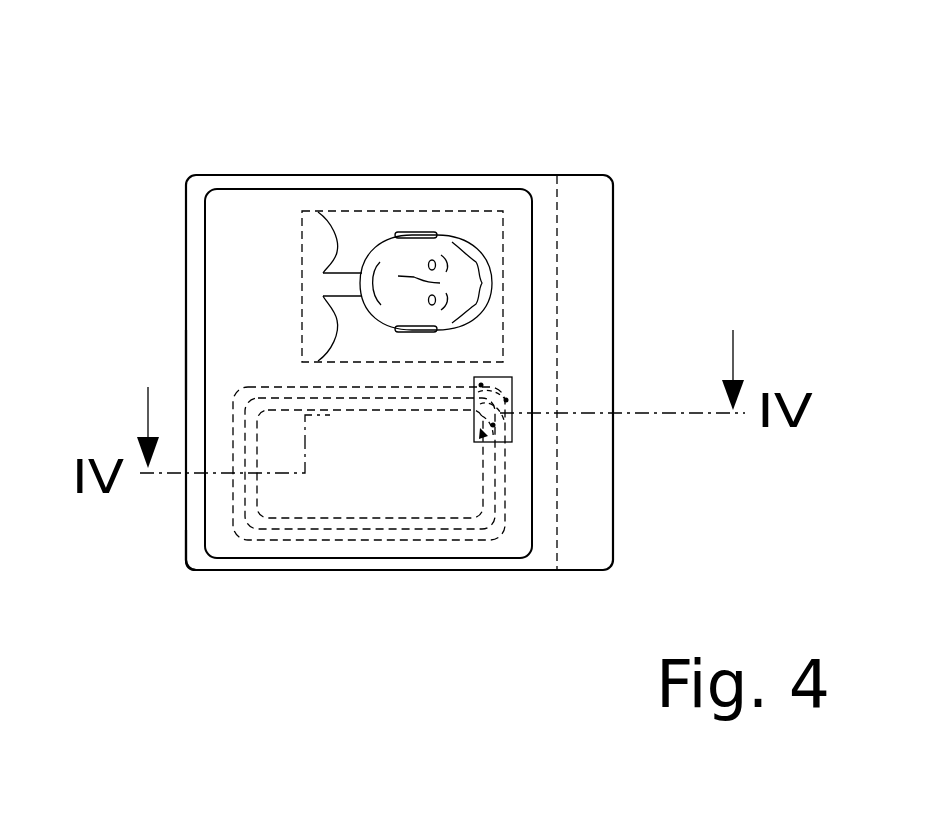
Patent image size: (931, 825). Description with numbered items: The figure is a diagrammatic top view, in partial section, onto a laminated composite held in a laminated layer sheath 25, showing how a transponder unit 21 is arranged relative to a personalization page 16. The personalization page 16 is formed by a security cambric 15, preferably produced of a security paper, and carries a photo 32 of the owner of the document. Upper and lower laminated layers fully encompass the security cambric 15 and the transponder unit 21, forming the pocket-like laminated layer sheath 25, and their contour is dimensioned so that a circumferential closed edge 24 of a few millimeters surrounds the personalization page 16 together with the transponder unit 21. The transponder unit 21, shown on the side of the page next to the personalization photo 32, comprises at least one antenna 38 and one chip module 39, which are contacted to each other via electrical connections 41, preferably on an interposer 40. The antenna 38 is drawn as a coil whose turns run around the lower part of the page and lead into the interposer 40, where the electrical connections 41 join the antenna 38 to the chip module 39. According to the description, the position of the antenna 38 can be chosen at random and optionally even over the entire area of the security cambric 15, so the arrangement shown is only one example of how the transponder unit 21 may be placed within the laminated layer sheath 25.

The security cambric 15 is at (320, 150).
The personalization page 16 is at (235, 225).
The photo 32 is at (419, 235).
The edge 24 is at (205, 362).
The laminated layer sheath 25 is at (178, 558).
The transponder unit 21 is at (548, 543).
The antenna 38 is at (404, 541).
The interposer 40 is at (513, 389).
The chip module 39 is at (513, 398).
The electrical connections 41 is at (481, 385).